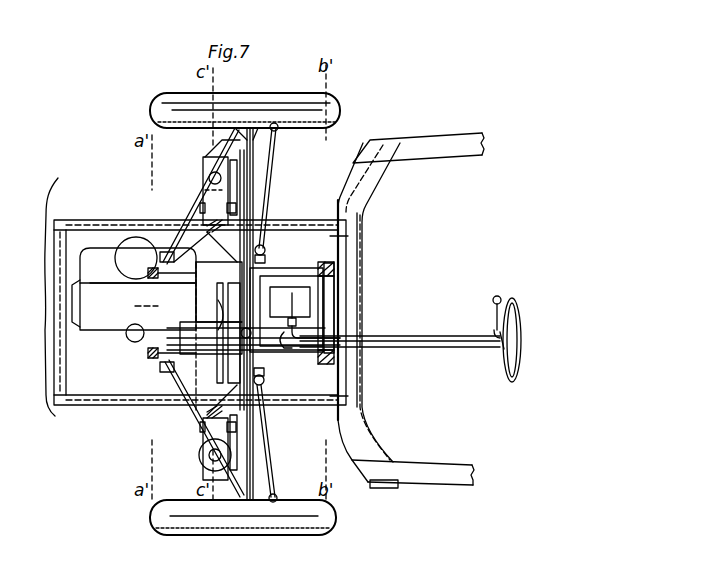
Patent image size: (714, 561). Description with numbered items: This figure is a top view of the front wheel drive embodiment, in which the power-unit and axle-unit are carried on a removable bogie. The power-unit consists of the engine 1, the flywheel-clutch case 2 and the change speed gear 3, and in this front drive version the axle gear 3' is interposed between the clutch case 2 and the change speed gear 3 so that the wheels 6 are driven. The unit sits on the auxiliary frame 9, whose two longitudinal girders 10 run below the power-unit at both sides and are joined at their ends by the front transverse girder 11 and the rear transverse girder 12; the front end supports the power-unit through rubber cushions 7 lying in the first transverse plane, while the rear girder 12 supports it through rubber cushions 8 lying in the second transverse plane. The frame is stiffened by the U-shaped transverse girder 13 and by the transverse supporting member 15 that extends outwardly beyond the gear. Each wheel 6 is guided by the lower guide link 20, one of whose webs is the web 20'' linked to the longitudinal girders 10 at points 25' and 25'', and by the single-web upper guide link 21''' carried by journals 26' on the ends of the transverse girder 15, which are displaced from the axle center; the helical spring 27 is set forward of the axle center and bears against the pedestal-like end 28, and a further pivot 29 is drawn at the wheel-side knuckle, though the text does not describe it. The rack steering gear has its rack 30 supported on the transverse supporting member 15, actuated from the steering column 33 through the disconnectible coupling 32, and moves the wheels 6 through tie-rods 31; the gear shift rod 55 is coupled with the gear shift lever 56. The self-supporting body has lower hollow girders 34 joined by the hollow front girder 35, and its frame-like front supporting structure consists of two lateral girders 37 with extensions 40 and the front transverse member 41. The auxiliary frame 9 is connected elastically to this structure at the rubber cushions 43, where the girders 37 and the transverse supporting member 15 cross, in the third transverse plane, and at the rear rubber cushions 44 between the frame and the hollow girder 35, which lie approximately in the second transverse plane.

The engine 1 is at (100, 325).
The flywheel-clutch case 2 is at (203, 293).
The change speed gear 3 is at (320, 310).
The axle gear 3' is at (220, 333).
The wheels 6 is at (336, 110).
The rubber cushions 7 is at (150, 275).
The rubber cushions 8 is at (336, 275).
The auxiliary frame 9 is at (230, 362).
The longitudinal girders 10 is at (300, 268).
The front transverse girder 11 is at (133, 309).
The rear transverse girder 12 is at (340, 330).
The transverse girder 13 is at (200, 406).
The transverse supporting member 15 is at (255, 226).
The lower guide link 20 is at (136, 258).
The web 20'' is at (272, 314).
The upper guide links 21''' is at (280, 141).
The linkage point 25' is at (157, 320).
The linkage point 25'' is at (281, 251).
The journals 26' is at (191, 201).
The helical spring 27 is at (205, 170).
The pedestal-like end 28 is at (210, 157).
The pivot 29 is at (209, 179).
The rack 30 is at (266, 372).
The tie-rods 31 is at (268, 170).
The disconnectible coupling 32 is at (290, 345).
The steering column 33 is at (440, 348).
The lower hollow girders 34 is at (452, 152).
The hollow front girder 35 is at (372, 178).
The lateral girders 37 is at (290, 228).
The extensions 40 is at (95, 226).
The front transverse member 41 is at (64, 262).
The rubber cushions 43 is at (200, 222).
The rubber cushions 44 is at (334, 266).
The gear shift rod 55 is at (450, 338).
The gear shift lever 56 is at (335, 312).